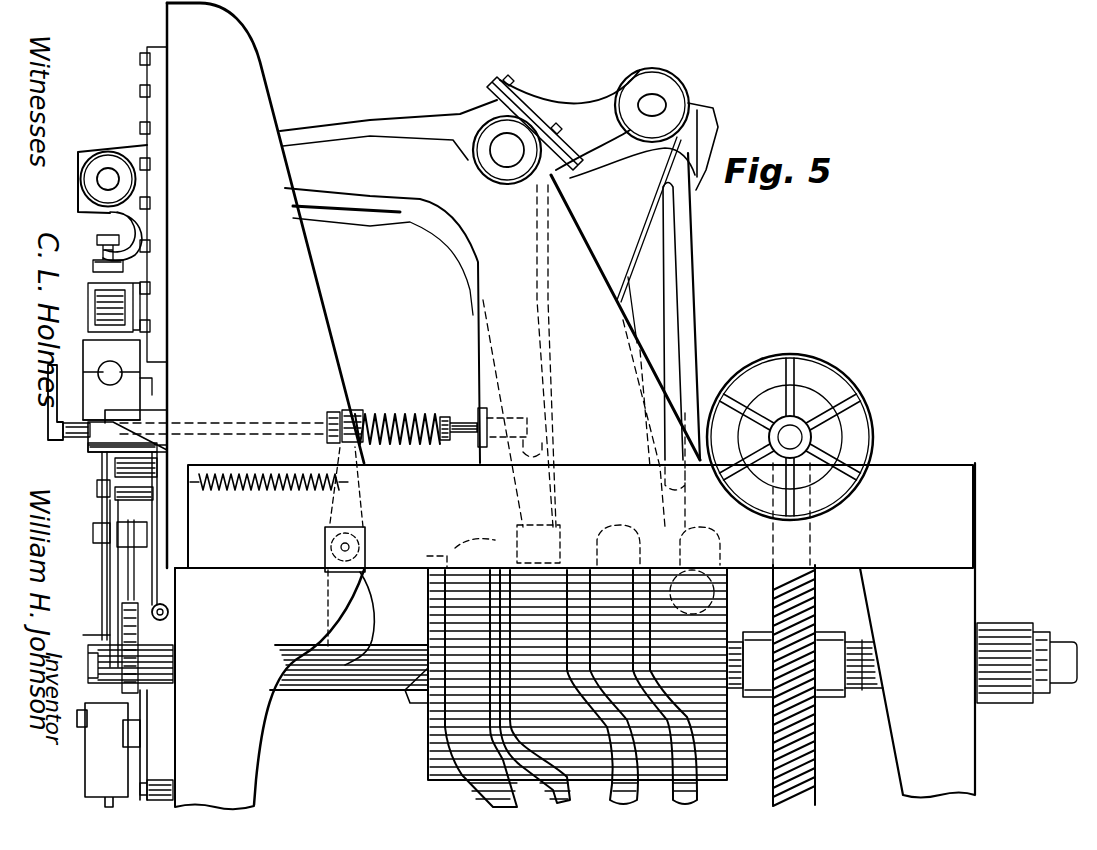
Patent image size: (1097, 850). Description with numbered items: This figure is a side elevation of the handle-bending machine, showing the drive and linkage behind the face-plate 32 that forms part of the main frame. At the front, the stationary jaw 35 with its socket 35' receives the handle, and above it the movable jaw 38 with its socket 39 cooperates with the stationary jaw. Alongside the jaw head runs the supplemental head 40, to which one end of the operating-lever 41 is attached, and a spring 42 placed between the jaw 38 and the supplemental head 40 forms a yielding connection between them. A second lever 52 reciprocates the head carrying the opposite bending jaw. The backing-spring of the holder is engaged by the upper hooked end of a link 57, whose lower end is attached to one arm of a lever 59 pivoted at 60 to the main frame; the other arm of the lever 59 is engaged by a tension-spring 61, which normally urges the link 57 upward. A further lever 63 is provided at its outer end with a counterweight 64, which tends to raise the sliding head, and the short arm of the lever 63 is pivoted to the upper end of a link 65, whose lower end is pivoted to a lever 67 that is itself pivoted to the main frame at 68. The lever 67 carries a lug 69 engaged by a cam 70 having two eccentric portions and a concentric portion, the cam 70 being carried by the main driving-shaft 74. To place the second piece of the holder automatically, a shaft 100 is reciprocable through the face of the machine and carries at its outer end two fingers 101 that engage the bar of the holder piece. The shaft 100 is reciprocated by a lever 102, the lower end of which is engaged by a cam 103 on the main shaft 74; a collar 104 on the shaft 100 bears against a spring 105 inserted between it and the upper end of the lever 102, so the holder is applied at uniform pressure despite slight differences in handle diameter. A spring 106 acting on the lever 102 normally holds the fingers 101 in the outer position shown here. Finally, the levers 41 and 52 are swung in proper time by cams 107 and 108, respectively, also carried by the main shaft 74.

The face-plate 32 is at (165, 35).
The stationary jaw 35 is at (125, 405).
The socket 35' is at (162, 374).
The jaw 38 is at (110, 361).
The socket 39 is at (105, 368).
The supplemental head 40 is at (100, 262).
The operating-lever 41 is at (80, 155).
The spring 42 is at (97, 312).
The lever 52 is at (668, 323).
The link 57 is at (100, 548).
The lever 59 is at (112, 517).
The pivot 60 is at (97, 492).
The tension-spring 61 is at (169, 612).
The lever 63 is at (105, 613).
The counterweight 64 is at (102, 755).
The link 65 is at (136, 585).
The lever 67 is at (146, 745).
The pivot 68 is at (174, 790).
The lug 69 is at (140, 735).
The cam 70 is at (125, 650).
The main driving-shaft 74 is at (318, 680).
The shaft 100 is at (74, 440).
The fingers 101 is at (52, 398).
The lever 102 is at (360, 606).
The cam 103 is at (413, 700).
The collar 104 is at (447, 418).
The spring 105 is at (392, 420).
The spring 106 is at (276, 491).
The cam 107 is at (475, 730).
The cam 108 is at (648, 752).